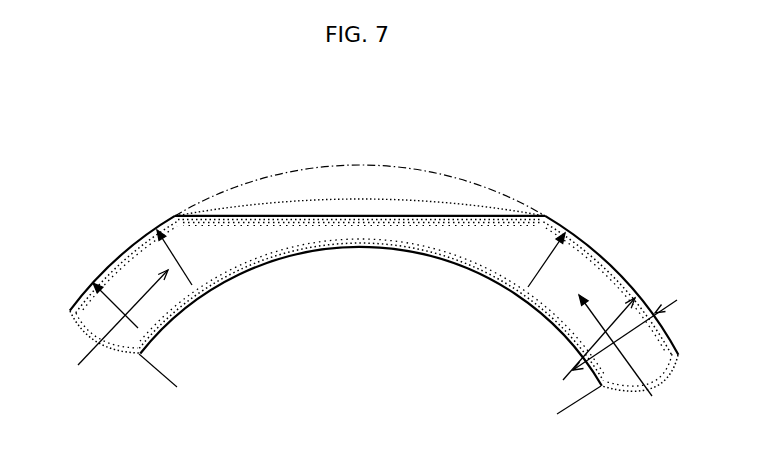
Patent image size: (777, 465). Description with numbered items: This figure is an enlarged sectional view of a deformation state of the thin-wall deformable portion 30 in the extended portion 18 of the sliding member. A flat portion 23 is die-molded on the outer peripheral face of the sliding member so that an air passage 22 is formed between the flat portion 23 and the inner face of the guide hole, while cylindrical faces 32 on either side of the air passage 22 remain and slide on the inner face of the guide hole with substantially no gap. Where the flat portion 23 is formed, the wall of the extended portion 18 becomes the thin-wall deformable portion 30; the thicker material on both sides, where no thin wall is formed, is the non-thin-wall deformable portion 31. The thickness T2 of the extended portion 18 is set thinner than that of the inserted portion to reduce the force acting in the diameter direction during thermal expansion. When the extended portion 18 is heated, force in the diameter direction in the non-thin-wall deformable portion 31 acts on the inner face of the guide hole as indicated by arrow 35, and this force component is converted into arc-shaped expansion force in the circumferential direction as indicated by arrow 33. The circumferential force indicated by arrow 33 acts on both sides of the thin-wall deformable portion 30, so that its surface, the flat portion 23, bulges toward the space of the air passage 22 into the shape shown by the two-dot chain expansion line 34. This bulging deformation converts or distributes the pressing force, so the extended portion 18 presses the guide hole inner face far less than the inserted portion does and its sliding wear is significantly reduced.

The extended portion 18 is at (590, 244).
The air passage 22 is at (350, 187).
The flat portion 23 is at (428, 210).
The thin-wall deformable portion 30 is at (360, 249).
The non-thin-wall deformable portion 31 is at (148, 315).
The cylindrical face 32 is at (118, 252).
The arrow 33 is at (87, 342).
The expansion line 34 is at (310, 203).
The arrow 35 is at (182, 263).
The thickness of the extended portion T2 is at (638, 324).